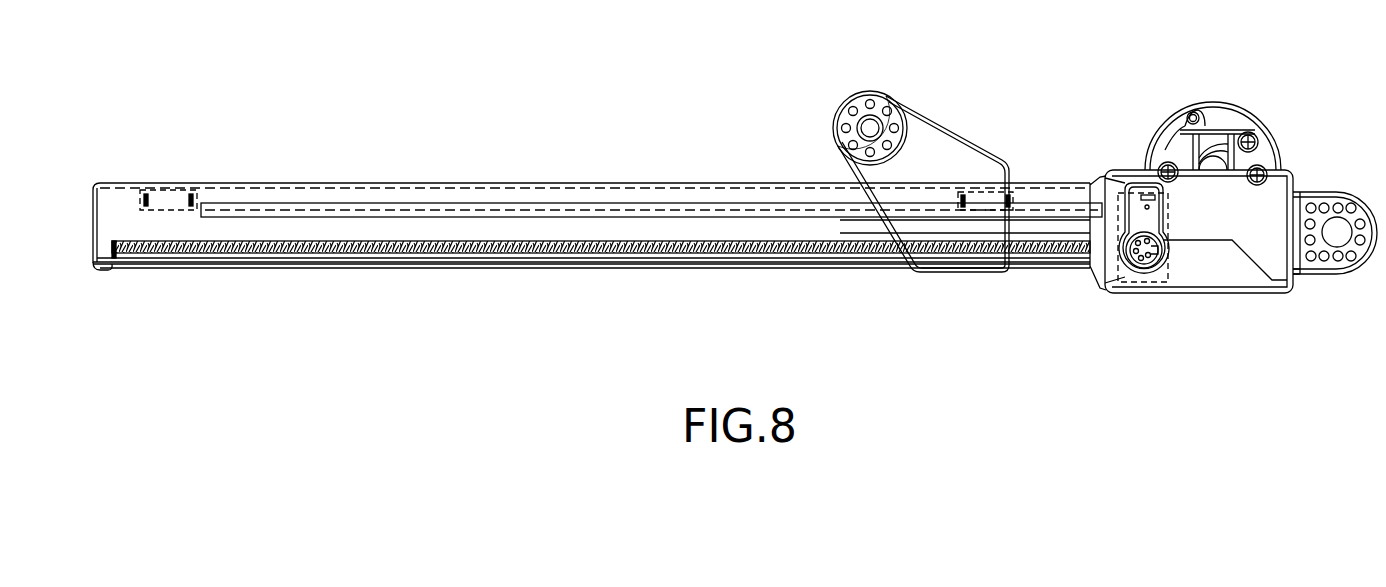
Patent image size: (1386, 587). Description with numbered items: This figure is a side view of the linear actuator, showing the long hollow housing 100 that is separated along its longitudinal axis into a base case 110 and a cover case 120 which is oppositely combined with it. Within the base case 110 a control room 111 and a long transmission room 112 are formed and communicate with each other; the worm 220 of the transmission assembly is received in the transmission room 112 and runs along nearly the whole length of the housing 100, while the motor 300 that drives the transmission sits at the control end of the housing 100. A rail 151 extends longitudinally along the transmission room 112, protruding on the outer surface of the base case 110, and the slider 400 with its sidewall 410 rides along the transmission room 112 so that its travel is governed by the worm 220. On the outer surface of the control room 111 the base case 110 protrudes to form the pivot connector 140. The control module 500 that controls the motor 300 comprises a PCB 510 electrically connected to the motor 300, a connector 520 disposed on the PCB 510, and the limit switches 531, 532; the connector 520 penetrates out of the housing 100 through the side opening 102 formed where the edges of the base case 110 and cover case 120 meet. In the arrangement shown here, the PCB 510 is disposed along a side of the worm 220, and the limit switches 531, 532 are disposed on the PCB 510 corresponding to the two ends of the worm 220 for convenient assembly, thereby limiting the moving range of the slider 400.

The housing 100 is at (1345, 352).
The side opening 102 is at (1099, 180).
The base case 110 is at (1322, 284).
The control room 111 is at (1128, 178).
The transmission room 112 is at (553, 183).
The cover case 120 is at (1193, 303).
The pivot connector 140 is at (1347, 192).
The rail 151 is at (630, 204).
The worm 220 is at (648, 254).
The motor 300 is at (1232, 98).
The slider 400 is at (863, 86).
The sidewall 410 is at (945, 108).
The control module 500 is at (1149, 290).
The PCB 510 is at (1128, 284).
The connector 520 is at (1126, 258).
The limit switch 531 is at (167, 192).
The limit switch 532 is at (982, 194).